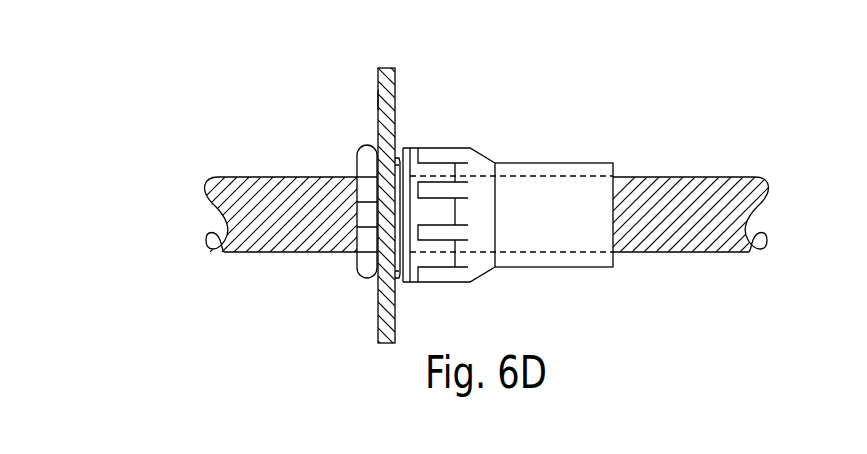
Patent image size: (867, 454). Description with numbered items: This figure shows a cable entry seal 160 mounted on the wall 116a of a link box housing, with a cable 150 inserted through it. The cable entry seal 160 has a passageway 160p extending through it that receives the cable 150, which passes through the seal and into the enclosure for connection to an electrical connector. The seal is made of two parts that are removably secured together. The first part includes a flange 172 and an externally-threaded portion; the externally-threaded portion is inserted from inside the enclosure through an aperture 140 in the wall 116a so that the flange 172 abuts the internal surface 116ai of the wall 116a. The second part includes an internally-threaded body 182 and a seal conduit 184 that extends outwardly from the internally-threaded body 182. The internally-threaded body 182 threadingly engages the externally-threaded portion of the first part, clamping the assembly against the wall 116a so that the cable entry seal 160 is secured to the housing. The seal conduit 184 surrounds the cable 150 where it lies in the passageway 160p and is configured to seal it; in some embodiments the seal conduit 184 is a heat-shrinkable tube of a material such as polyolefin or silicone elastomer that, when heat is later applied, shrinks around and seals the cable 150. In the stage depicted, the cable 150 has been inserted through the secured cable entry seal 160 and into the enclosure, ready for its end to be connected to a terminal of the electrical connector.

The wall 116a is at (397, 73).
The internal surface of the wall 116ai is at (378, 100).
The cable 150 is at (245, 177).
The flange 172 is at (367, 280).
The aperture 140 is at (400, 278).
The cable entry seal 160 is at (524, 162).
The internally-threaded body 182 is at (433, 148).
The seal conduit 184 is at (543, 163).
The passageway 160p is at (568, 181).